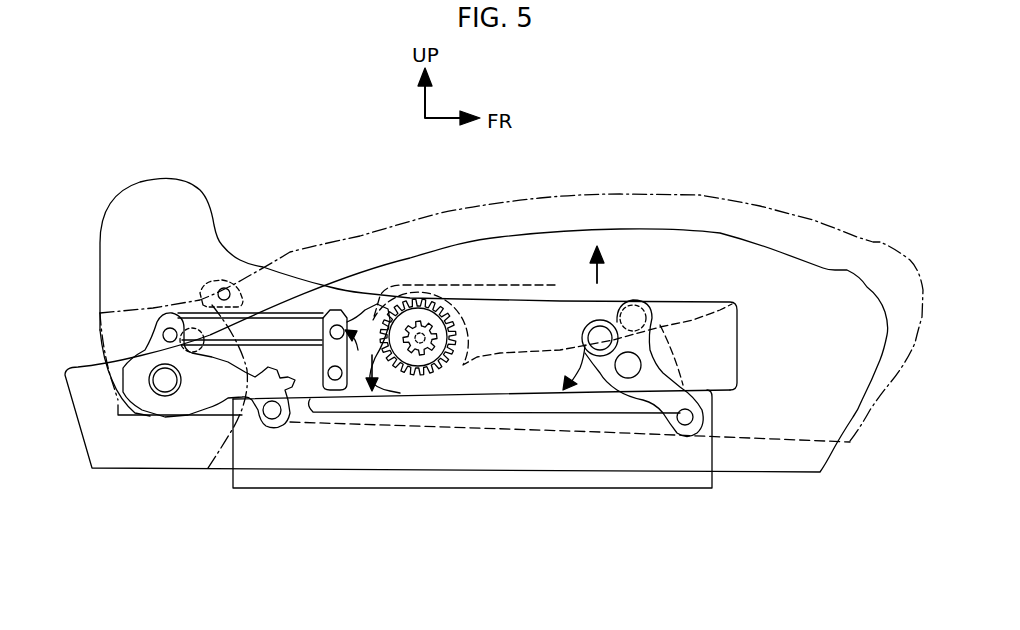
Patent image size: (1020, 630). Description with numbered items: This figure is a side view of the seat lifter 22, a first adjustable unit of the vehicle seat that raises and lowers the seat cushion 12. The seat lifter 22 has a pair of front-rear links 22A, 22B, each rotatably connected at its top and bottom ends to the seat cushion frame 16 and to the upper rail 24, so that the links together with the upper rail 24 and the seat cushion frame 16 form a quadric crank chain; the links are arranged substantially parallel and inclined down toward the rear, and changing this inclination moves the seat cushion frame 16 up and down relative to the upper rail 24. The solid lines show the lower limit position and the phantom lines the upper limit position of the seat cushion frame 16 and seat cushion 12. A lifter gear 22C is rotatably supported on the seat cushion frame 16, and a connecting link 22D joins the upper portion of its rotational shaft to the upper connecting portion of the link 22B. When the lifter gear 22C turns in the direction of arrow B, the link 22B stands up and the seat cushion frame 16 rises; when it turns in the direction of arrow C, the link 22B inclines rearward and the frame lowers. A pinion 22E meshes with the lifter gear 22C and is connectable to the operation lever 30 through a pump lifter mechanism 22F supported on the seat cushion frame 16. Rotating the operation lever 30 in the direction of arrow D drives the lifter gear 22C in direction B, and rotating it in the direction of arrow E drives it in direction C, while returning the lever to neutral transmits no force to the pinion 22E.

The seat cushion 12 is at (636, 230).
The seat lifter 22 is at (470, 273).
The seat cushion frame 16 is at (548, 383).
The upper rail 24 is at (624, 480).
The operation lever 30 is at (555, 293).
The front-rear link 22A is at (668, 395).
The front-rear link 22B is at (222, 382).
The lifter gear 22C is at (358, 310).
The connecting link 22D is at (290, 332).
The pinion 22E is at (433, 327).
The pump lifter mechanism 22F is at (437, 372).
The arrow B is at (378, 392).
The arrow C is at (358, 352).
The arrow D is at (597, 268).
The arrow E is at (585, 350).